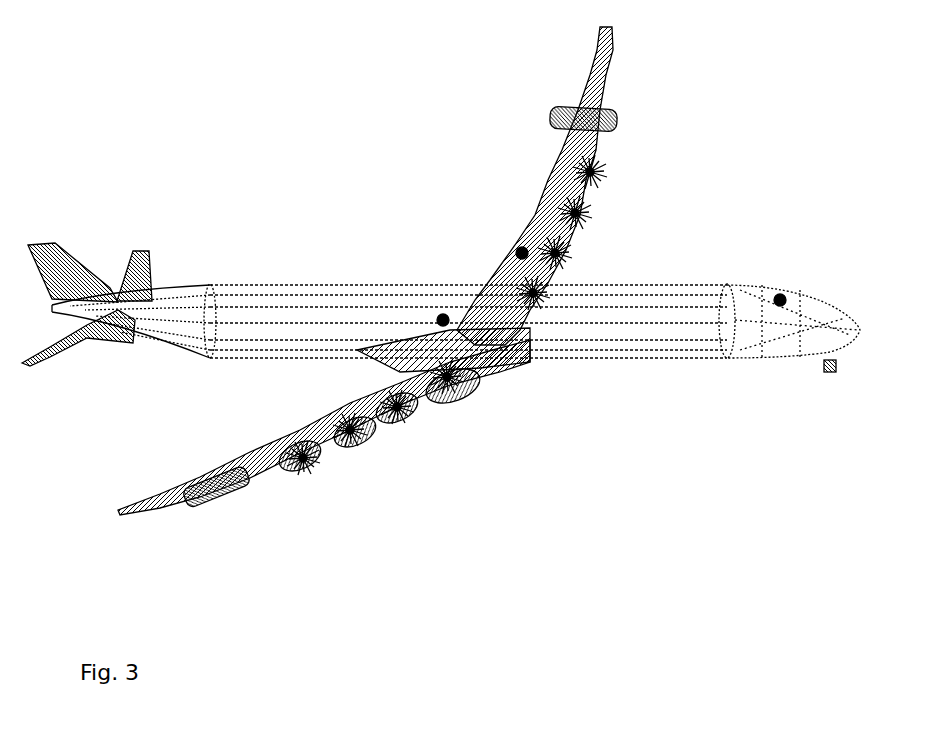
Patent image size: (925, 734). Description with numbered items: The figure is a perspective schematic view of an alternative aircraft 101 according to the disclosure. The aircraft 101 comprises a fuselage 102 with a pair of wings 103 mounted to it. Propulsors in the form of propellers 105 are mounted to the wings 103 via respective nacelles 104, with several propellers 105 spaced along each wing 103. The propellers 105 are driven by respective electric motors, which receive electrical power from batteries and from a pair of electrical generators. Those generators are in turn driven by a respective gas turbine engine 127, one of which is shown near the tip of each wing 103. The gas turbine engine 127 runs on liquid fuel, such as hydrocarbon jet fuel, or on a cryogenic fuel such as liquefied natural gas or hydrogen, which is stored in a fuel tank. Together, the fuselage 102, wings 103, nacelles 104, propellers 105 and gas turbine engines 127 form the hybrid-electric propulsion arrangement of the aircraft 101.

The aircraft 101 is at (292, 223).
The fuselage 102 is at (662, 360).
The wings 103 is at (604, 88).
The nacelles 104 is at (283, 455).
The propellers 105 is at (317, 475).
The gas turbine engine 127 is at (550, 117).